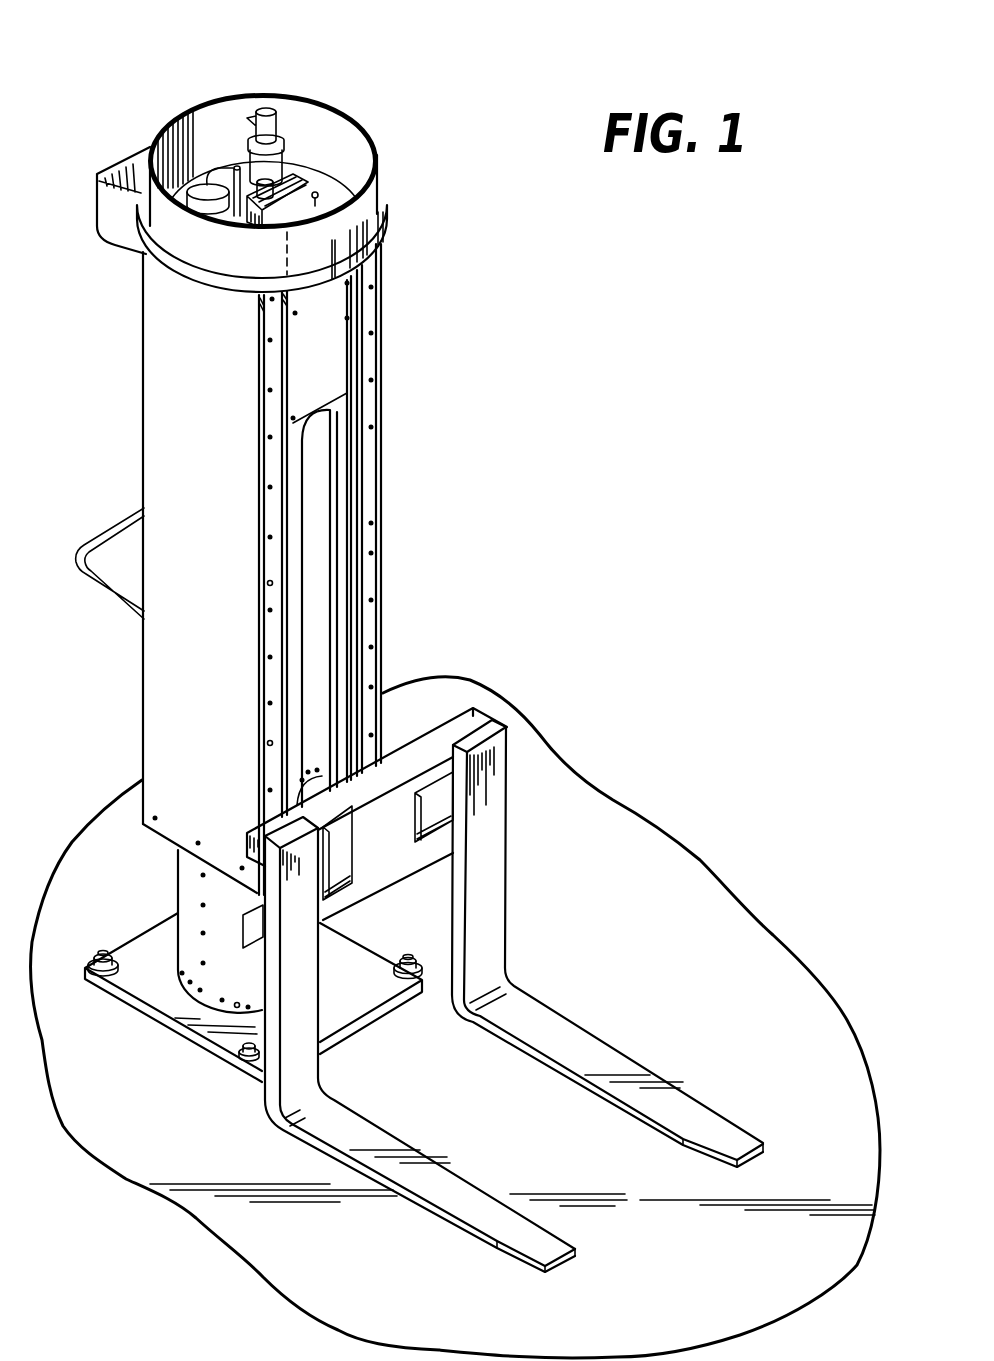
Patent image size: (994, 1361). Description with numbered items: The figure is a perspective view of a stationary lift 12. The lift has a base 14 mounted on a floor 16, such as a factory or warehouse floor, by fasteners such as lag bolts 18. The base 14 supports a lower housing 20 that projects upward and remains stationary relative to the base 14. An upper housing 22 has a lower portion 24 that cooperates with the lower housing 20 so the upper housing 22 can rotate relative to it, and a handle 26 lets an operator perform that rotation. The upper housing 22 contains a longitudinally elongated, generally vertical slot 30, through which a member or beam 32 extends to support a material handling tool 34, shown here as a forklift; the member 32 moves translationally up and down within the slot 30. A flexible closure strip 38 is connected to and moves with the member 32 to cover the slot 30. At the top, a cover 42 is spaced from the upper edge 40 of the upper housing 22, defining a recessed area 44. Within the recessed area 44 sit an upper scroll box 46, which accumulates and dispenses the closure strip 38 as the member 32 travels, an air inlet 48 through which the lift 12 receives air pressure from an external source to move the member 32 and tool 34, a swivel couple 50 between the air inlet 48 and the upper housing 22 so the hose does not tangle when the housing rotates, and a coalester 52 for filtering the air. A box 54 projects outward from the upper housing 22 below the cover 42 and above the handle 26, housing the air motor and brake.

The lift 12 is at (387, 633).
The base 14 is at (367, 947).
The floor 16 is at (703, 937).
The lag bolts 18 is at (418, 975).
The lower housing 20 is at (183, 893).
The upper housing 22 is at (151, 677).
The lower portion 24 is at (142, 824).
The handle 26 is at (80, 550).
The slot 30 is at (327, 477).
The member 32 is at (385, 735).
The material handling tool 34 is at (742, 1135).
The flexible closure strip 38 is at (320, 603).
The upper edge 40 is at (373, 143).
The cover 42 is at (340, 187).
The recessed area 44 is at (330, 132).
The upper scroll box 46 is at (345, 198).
The air inlet 48 is at (252, 115).
The swivel couple 50 is at (277, 153).
The coalester 52 is at (202, 173).
The box 54 is at (118, 172).